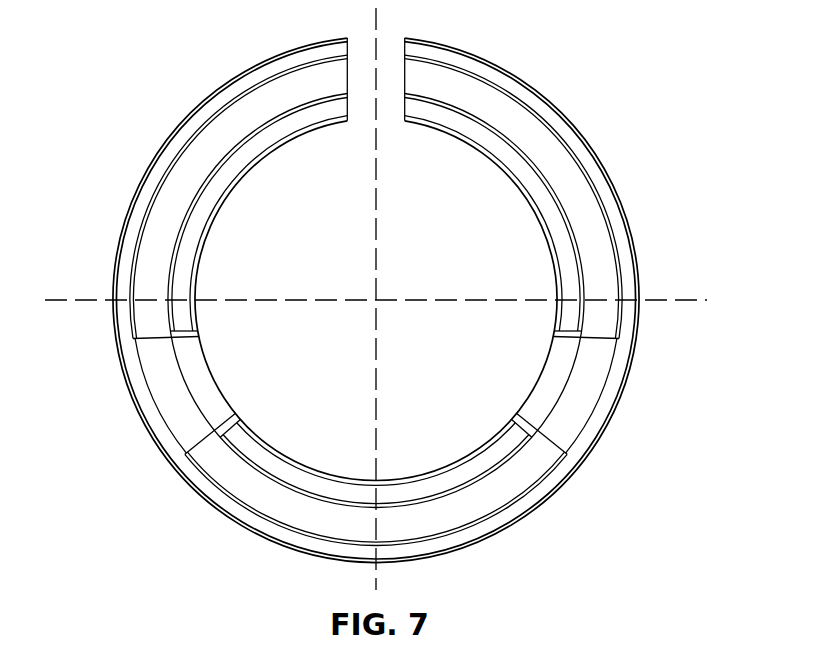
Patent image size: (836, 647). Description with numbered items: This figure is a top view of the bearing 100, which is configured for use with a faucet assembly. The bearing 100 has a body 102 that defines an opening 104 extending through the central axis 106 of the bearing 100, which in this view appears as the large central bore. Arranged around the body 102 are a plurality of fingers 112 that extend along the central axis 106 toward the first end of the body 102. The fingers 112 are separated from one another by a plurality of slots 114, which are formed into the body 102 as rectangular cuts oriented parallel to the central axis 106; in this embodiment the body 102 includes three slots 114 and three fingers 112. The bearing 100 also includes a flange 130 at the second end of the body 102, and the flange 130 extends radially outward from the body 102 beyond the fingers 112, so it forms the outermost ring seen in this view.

The bearing 100 is at (140, 44).
The body 102 is at (381, 300).
The opening 104 is at (245, 347).
The central axis 106 is at (376, 300).
The fingers 112 is at (550, 147).
The slots 114 is at (594, 369).
The flange 130 is at (532, 90).